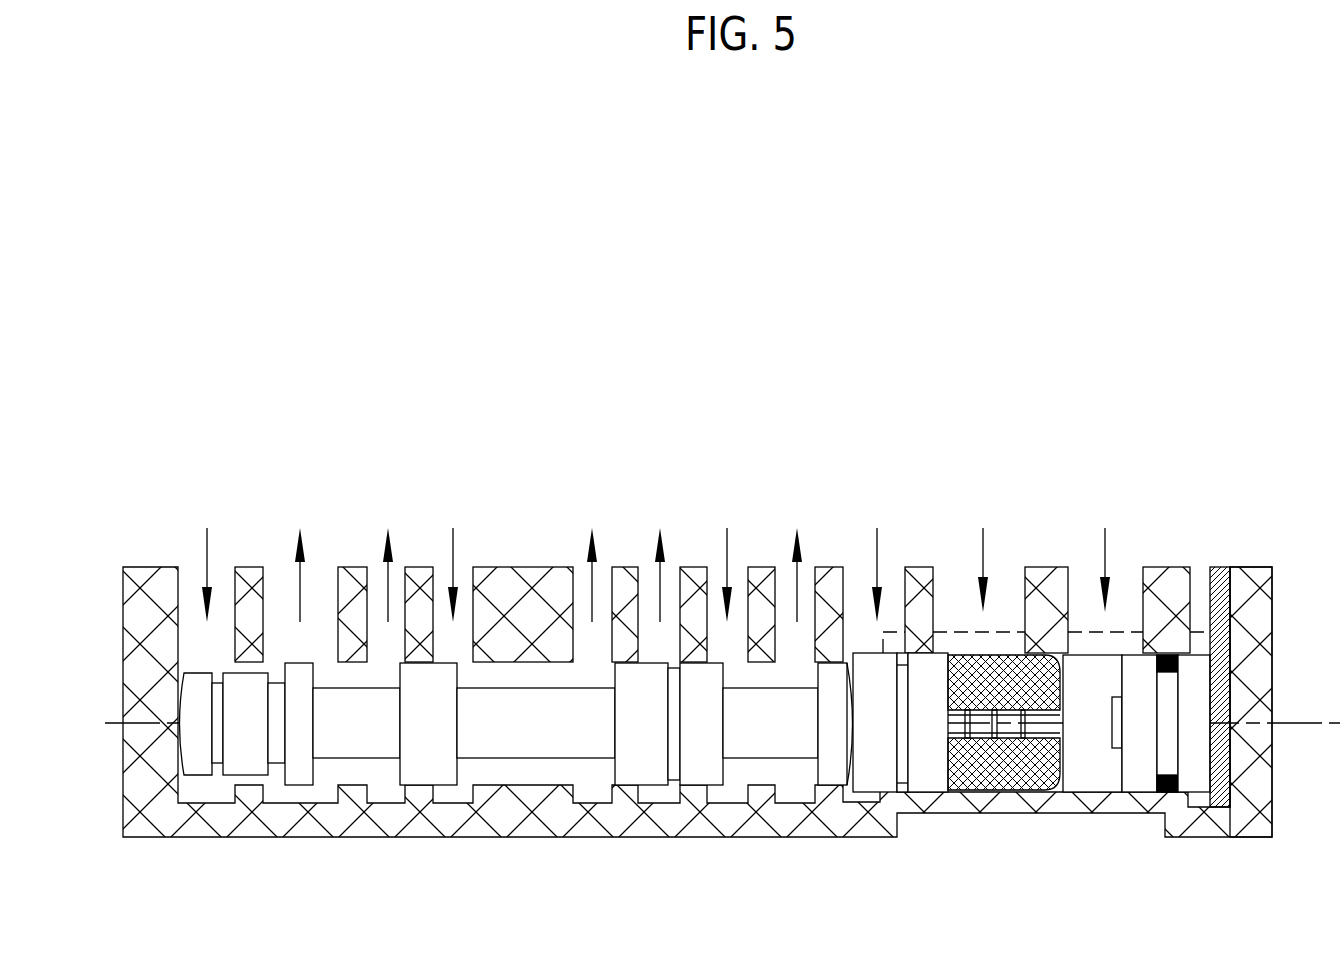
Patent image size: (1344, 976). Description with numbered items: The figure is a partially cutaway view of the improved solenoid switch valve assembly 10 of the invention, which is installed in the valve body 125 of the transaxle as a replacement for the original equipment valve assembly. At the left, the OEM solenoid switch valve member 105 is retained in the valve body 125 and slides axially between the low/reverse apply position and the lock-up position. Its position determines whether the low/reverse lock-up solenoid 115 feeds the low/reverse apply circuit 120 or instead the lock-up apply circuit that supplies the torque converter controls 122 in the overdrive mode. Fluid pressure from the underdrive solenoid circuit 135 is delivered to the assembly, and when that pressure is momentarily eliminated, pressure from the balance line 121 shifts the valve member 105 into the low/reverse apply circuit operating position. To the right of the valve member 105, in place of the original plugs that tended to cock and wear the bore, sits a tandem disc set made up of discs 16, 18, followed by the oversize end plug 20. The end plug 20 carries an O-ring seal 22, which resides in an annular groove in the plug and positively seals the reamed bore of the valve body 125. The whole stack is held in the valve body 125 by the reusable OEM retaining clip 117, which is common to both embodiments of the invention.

The solenoid switch valve assembly 10 is at (671, 216).
The solenoid switch valve member 105 is at (555, 720).
The valve body 125 is at (127, 597).
The retaining clip 117 is at (1220, 572).
The disc 16 is at (905, 795).
The disc 18 is at (1050, 798).
The oversize end plug 20 is at (1143, 792).
The O-ring seal 22 is at (1228, 835).
The balance line 121 is at (207, 428).
The low/reverse apply circuit 120 is at (397, 428).
The low/reverse lock-up solenoid 115 is at (470, 449).
The torque converter controls 122 is at (578, 462).
The underdrive solenoid circuit 135 is at (721, 427).